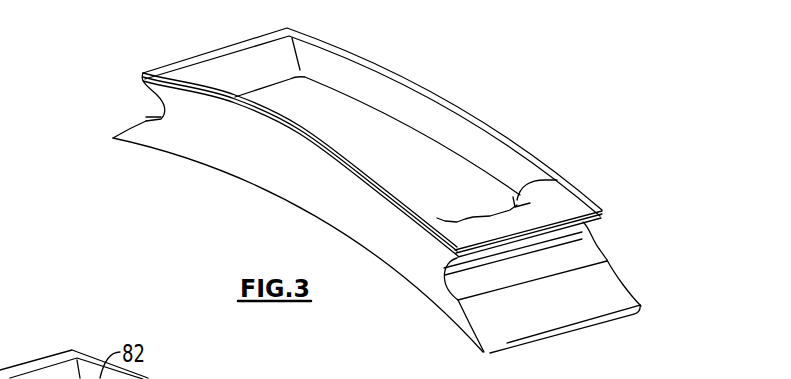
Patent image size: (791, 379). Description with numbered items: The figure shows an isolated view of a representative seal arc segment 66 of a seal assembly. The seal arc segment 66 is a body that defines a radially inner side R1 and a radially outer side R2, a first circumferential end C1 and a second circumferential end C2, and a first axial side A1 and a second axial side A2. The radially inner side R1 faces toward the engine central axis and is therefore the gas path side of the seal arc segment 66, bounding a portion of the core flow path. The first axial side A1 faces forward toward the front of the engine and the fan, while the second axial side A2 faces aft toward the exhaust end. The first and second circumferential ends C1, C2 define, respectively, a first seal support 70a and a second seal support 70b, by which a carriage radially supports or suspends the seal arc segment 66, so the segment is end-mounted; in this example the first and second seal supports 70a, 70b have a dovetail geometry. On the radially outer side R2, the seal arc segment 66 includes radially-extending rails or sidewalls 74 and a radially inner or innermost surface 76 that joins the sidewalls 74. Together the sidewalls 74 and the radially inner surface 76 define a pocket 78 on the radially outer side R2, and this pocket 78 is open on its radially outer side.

The seal arc segment 66 is at (207, 183).
The first seal support 70a is at (462, 279).
The second seal support 70b is at (158, 107).
The sidewalls 74 is at (217, 70).
The radially inner surface 76 is at (325, 93).
The pocket 78 is at (385, 126).
The first axial side A1 is at (286, 184).
The second axial side A2 is at (458, 100).
The radially inner side R1 is at (395, 273).
The radially outer side R2 is at (543, 144).
The first circumferential end C1 is at (626, 266).
The second circumferential end C2 is at (112, 111).